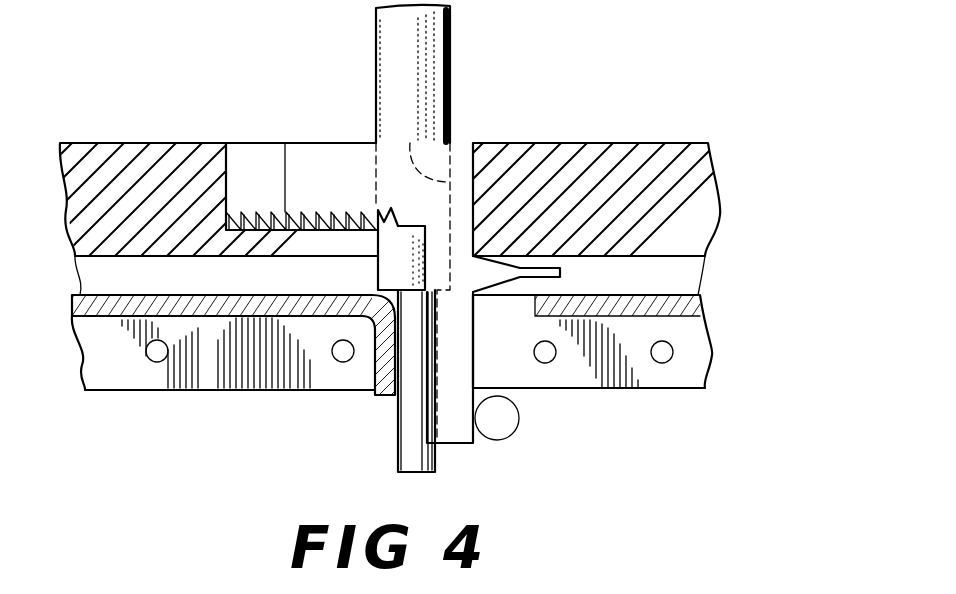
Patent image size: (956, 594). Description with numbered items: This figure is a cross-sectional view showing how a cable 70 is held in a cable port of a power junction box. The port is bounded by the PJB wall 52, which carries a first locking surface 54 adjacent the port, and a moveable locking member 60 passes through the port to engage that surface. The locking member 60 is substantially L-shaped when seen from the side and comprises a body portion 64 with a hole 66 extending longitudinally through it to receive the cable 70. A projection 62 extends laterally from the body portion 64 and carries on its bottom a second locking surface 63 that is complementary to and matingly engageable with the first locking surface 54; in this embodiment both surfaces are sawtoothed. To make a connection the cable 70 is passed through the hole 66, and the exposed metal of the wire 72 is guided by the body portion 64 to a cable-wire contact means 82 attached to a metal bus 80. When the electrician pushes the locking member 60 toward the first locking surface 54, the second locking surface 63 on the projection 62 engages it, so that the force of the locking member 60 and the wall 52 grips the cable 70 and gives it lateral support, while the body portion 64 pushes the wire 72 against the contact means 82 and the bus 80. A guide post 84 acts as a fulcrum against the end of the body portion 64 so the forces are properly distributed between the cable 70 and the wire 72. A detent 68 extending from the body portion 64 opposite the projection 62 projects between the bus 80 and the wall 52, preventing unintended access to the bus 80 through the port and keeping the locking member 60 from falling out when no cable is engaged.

The PJB wall 52 is at (135, 165).
The first locking surface 54 is at (255, 210).
The locking member 60 is at (471, 140).
The projection 62 is at (337, 208).
The second locking surface 63 is at (302, 165).
The body portion 64 is at (452, 445).
The hole 66 is at (451, 92).
The detent 68 is at (560, 272).
The cable 70 is at (381, 74).
The wire 72 is at (410, 470).
The bus 80 is at (238, 378).
The cable-wire contact means 82 is at (383, 392).
The guide post 84 is at (517, 420).